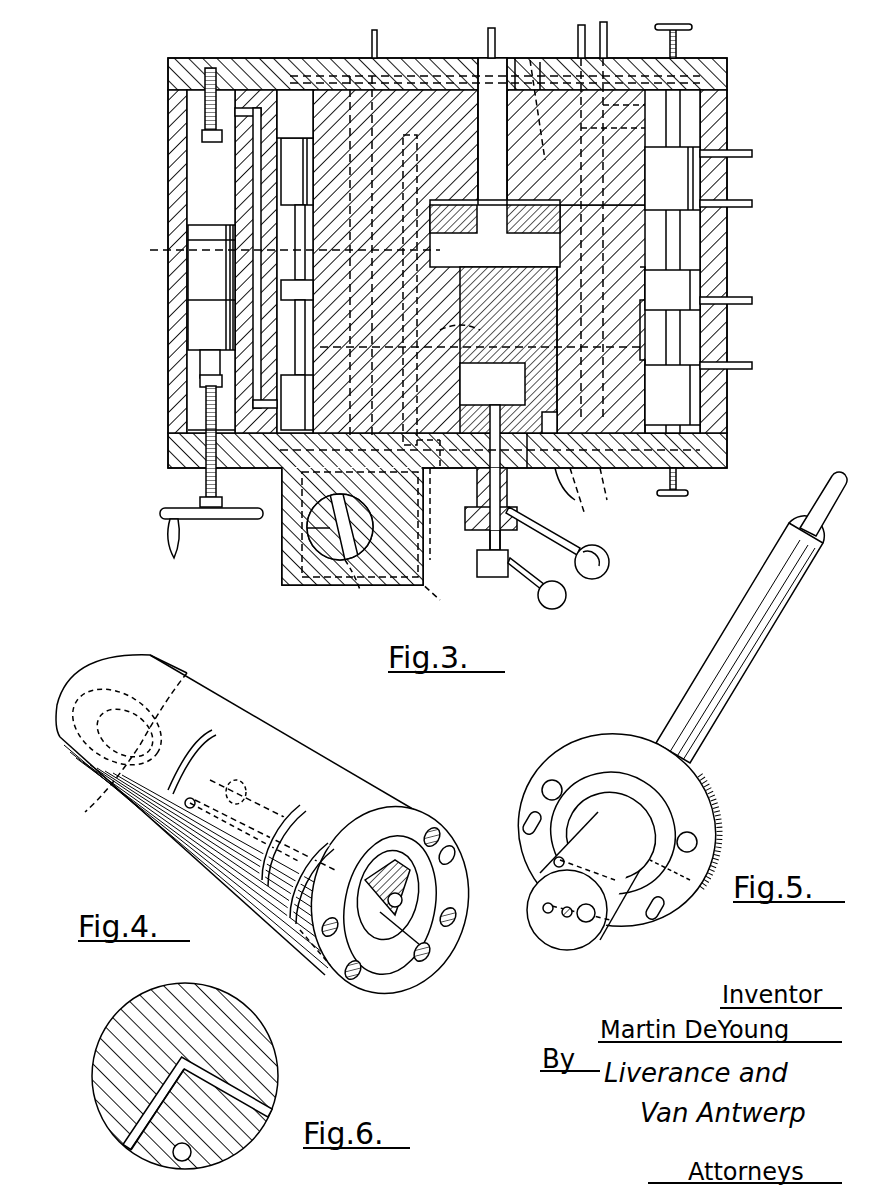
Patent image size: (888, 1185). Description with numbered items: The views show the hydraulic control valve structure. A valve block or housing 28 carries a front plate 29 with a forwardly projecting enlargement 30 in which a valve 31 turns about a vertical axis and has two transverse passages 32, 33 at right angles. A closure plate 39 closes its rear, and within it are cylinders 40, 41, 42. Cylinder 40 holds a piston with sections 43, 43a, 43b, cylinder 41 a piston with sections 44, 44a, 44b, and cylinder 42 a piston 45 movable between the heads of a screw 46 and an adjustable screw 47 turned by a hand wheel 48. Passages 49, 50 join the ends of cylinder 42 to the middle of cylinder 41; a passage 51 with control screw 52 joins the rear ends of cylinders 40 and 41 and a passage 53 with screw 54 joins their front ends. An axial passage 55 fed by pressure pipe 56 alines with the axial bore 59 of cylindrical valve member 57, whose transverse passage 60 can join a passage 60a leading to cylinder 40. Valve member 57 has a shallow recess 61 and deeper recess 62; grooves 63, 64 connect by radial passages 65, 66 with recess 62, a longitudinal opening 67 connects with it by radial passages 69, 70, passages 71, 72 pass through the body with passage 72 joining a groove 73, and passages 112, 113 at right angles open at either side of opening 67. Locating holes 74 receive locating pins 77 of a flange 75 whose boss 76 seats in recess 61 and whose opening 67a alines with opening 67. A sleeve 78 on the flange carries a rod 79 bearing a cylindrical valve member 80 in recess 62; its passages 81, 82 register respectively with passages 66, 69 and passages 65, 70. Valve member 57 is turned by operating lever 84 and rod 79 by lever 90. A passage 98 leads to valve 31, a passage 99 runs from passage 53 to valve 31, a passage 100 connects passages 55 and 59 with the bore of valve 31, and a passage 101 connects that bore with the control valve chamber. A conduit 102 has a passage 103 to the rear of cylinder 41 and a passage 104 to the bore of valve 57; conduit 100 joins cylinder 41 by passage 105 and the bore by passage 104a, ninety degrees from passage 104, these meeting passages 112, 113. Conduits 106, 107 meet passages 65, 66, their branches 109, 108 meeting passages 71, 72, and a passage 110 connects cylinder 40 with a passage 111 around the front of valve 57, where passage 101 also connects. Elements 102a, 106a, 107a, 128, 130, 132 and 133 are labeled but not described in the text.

In FIG. 3, the valve block or housing 28 is at (410, 160).
In FIG. 3, the plate 29 is at (562, 487).
In FIG. 3, the forwardly projecting enlargement 30 is at (290, 565).
In FIG. 3, the valve 31 is at (310, 534).
In FIG. 3, the transverse passage 32 is at (345, 560).
In FIG. 3, the transverse passage 33 is at (362, 590).
In FIG. 3, the closure plate 39 is at (706, 62).
In FIG. 3, the cylinder 40 is at (705, 114).
In FIG. 3, the cylinder 41 is at (294, 105).
In FIG. 3, the cylinder 42 is at (240, 175).
In FIG. 3, the piston section 43 is at (690, 180).
In FIG. 3, the piston section 43a is at (705, 276).
In FIG. 3, the piston section 43b is at (705, 400).
In FIG. 3, the piston section 44 is at (290, 165).
In FIG. 3, the piston section 44a is at (200, 286).
In FIG. 3, the piston section 44b is at (200, 430).
In FIG. 3, the piston 45 is at (205, 315).
In FIG. 3, the screw 46 is at (205, 110).
In FIG. 3, the adjustable screw 47 is at (205, 400).
In FIG. 3, the hand wheel 48 is at (166, 516).
In FIG. 3, the passage 49 is at (255, 180).
In FIG. 3, the passage 50 is at (200, 360).
In FIG. 3, the conduit or passage 51 is at (545, 99).
In FIG. 3, the screw 52 is at (668, 40).
In FIG. 3, the conduit or passage 53 is at (612, 489).
In FIG. 3, the control screw 54 is at (678, 486).
In FIG. 3, the axial passage 55 is at (513, 60).
In FIG. 3, the pressure liquid pipe or conduit 56 is at (480, 32).
In FIG. 3, the cylindrical valve member 57 is at (480, 140).
In FIG. 4, the cylindrical valve member 57 is at (274, 855).
In FIG. 6, the cylindrical valve member 57 is at (118, 1030).
In FIG. 3, the axial bore 59 is at (547, 57).
In FIG. 4, the axial bore 59 is at (90, 790).
In FIG. 3, the transverse passage 60 is at (495, 319).
In FIG. 4, the transverse passage 60 is at (130, 820).
In FIG. 3, the passage 60a is at (672, 178).
In FIG. 4, the shallow cylindrical recess 61 is at (398, 962).
In FIG. 4, the deeper cylindrical recess 62 is at (360, 950).
In FIG. 4, the groove 63 is at (270, 900).
In FIG. 4, the groove 64 is at (280, 905).
In FIG. 3, the radial passage 65 is at (548, 468).
In FIG. 4, the radial passage 65 is at (304, 960).
In FIG. 3, the radial passage 66 is at (528, 470).
In FIG. 4, the radial passage 66 is at (265, 836).
In FIG. 4, the longitudinal opening 67 is at (440, 915).
In FIG. 6, the longitudinal opening 67 is at (190, 1160).
In FIG. 5, the opening 67a is at (584, 925).
In FIG. 4, the radial passage 69 is at (388, 883).
In FIG. 4, the radial passage 70 is at (405, 905).
In FIG. 4, the passage 71 is at (185, 810).
In FIG. 4, the passage 72 is at (234, 779).
In FIG. 4, the groove 73 is at (218, 735).
In FIG. 4, the locating holes 74 is at (455, 852).
In FIG. 5, the flange 75 is at (690, 812).
In FIG. 5, the cylindrical boss 76 is at (600, 803).
In FIG. 5, the locating pins 77 is at (530, 828).
In FIG. 3, the sleeve 78 is at (466, 512).
In FIG. 5, the sleeve 78 is at (735, 700).
In FIG. 3, the rod 79 is at (478, 572).
In FIG. 5, the rod 79 is at (830, 505).
In FIG. 3, the cylindrical valve member 80 is at (453, 464).
In FIG. 5, the cylindrical valve member 80 is at (600, 930).
In FIG. 5, the passage 81 is at (618, 872).
In FIG. 5, the passage 82 is at (684, 890).
In FIG. 3, the operating lever 84 is at (582, 580).
In FIG. 3, the manually operable lever 90 is at (516, 575).
In FIG. 3, the conduit or passage 98 is at (360, 130).
In FIG. 3, the passage 99 is at (470, 470).
In FIG. 3, the passage or conduit 100 is at (449, 514).
In FIG. 3, the passage 101 is at (435, 595).
In FIG. 3, the passage or conduit 102 is at (398, 75).
In FIG. 3, the pin 102a is at (398, 32).
In FIG. 3, the connecting passage or conduit 103 is at (296, 160).
In FIG. 3, the passage 104 is at (488, 466).
In FIG. 3, the passage 104a is at (492, 383).
In FIG. 3, the passage or conduit 105 is at (210, 248).
In FIG. 3, the passage or conduit 106 is at (645, 106).
In FIG. 3, the pin 106a is at (628, 216).
In FIG. 3, the passage or conduit 107 is at (645, 130).
In FIG. 3, the pin 107a is at (591, 210).
In FIG. 3, the passage 108 is at (556, 280).
In FIG. 3, the passage 109 is at (596, 247).
In FIG. 3, the passage 110 is at (630, 470).
In FIG. 3, the passage 111 is at (588, 499).
In FIG. 3, the passage 112 is at (455, 340).
In FIG. 6, the passage 112 is at (150, 1118).
In FIG. 3, the passage 113 is at (440, 330).
In FIG. 6, the passage 113 is at (222, 1095).
In FIG. 3, the pin 128 is at (752, 205).
In FIG. 3, the pin 130 is at (752, 301).
In FIG. 3, the pin 132 is at (752, 366).
In FIG. 3, the pin 133 is at (752, 152).